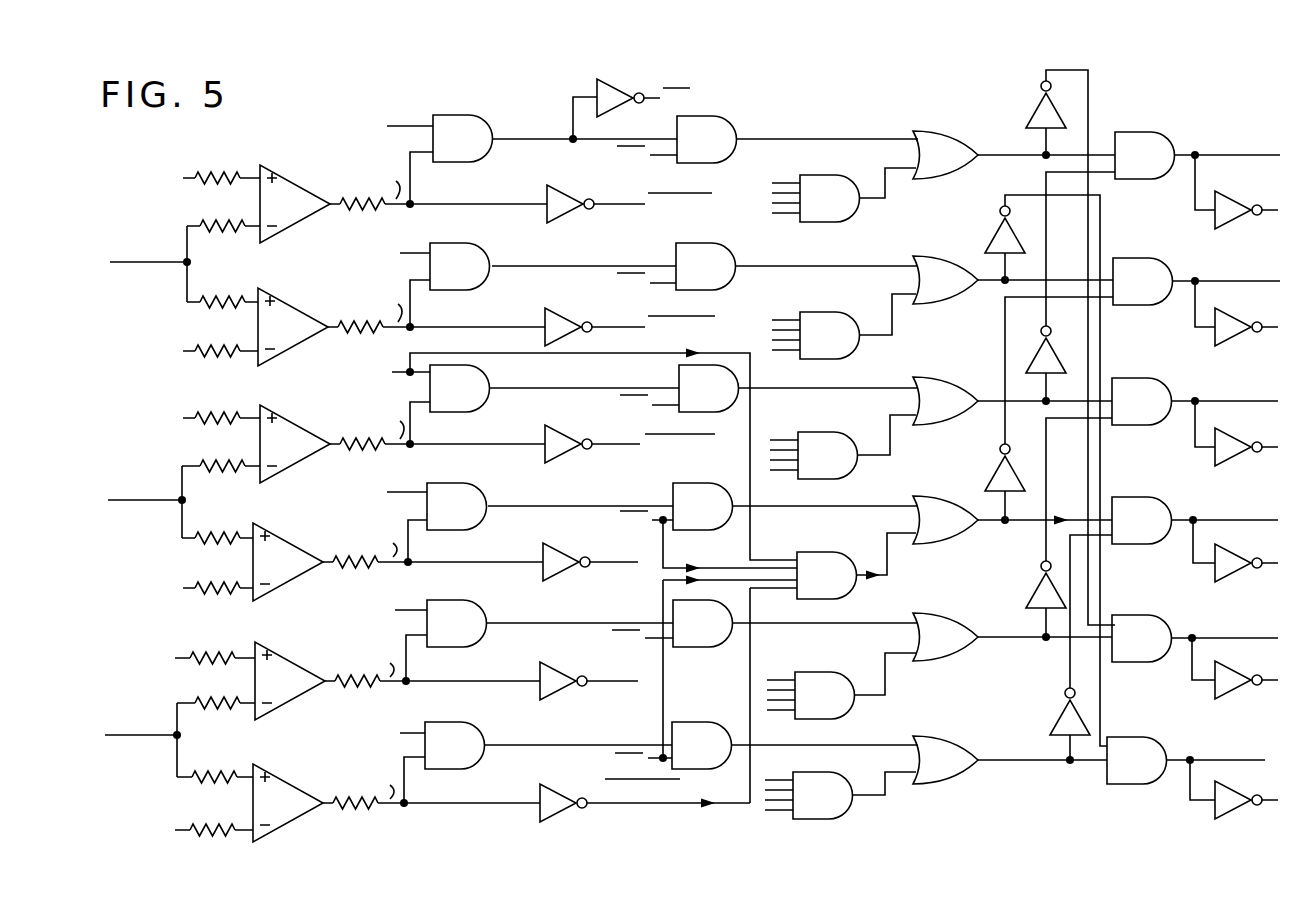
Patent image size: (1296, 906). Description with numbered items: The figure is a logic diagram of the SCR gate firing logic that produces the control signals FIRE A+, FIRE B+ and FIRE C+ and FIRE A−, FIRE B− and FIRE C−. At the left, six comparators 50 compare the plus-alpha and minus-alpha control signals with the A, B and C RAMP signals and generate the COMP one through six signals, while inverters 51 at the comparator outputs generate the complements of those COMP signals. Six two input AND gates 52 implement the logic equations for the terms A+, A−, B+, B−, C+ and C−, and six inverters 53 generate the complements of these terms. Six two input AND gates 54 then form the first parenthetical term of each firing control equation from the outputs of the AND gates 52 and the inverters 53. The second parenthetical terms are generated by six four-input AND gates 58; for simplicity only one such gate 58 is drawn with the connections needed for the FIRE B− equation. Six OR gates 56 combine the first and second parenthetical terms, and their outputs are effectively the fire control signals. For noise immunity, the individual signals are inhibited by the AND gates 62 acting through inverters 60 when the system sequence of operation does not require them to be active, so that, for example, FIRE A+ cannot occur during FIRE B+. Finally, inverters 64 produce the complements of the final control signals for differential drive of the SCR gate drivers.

The comparators 50 is at (348, 163).
The inverters 51 is at (612, 827).
The two input AND gates 52 is at (345, 827).
The inverters 53 is at (607, 105).
The two input AND gates 54 is at (618, 827).
The OR gates 56 is at (888, 827).
The 4-input AND gates 58 is at (755, 827).
The inverters 60 is at (1100, 827).
The AND gates 62 is at (1105, 827).
The inverters 64 is at (1195, 827).